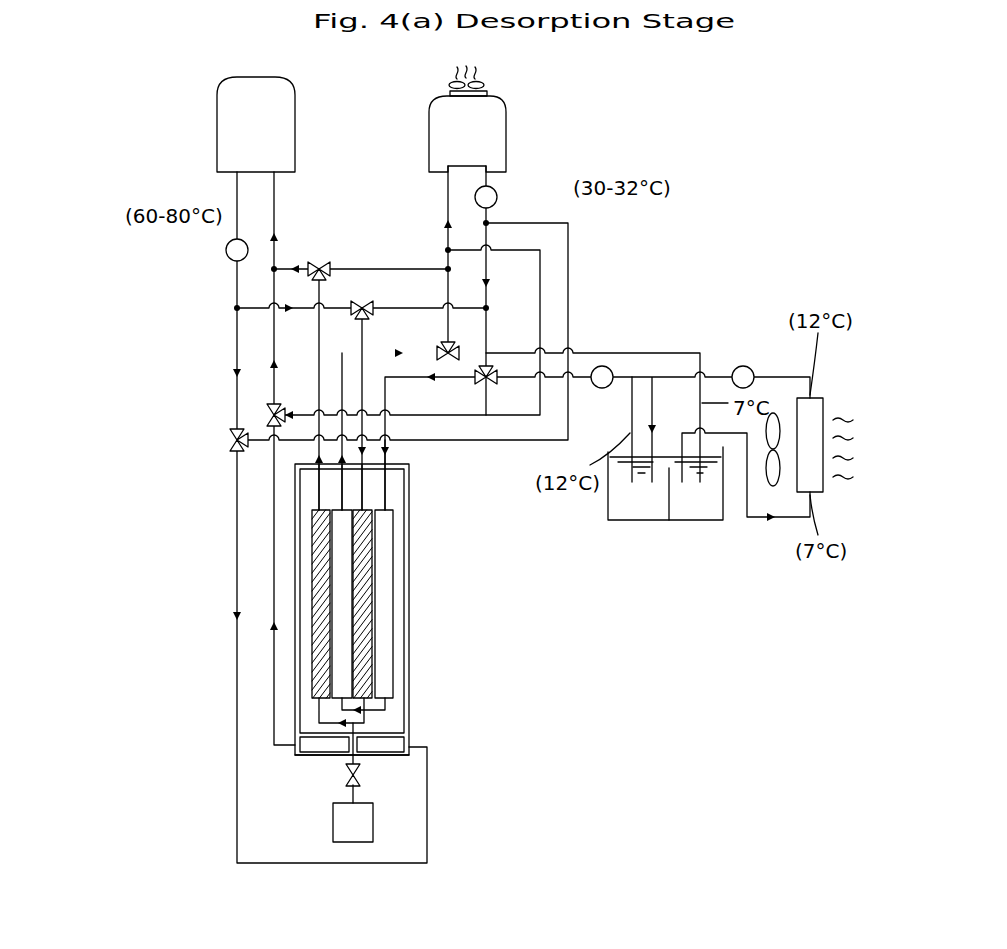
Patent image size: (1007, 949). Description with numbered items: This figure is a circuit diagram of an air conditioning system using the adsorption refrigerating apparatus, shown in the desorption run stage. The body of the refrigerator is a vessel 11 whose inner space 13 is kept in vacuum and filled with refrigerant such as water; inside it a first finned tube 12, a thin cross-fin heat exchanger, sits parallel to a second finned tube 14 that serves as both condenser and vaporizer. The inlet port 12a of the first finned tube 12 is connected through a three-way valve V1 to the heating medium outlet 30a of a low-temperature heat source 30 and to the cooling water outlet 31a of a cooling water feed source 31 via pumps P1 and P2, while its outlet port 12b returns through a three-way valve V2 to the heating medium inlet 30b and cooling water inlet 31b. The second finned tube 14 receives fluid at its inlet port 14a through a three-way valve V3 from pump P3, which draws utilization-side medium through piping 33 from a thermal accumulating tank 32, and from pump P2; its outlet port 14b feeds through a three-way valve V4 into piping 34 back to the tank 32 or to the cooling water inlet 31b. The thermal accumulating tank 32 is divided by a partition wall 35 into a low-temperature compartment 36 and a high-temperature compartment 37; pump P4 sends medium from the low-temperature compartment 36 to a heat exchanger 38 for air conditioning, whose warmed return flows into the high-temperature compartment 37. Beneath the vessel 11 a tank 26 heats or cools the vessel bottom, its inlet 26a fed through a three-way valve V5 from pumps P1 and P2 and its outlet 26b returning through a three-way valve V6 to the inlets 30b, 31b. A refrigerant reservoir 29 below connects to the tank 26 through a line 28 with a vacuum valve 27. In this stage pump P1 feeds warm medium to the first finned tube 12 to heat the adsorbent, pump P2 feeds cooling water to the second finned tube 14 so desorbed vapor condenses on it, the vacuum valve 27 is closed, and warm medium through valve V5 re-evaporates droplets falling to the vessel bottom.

The vessel 11 is at (410, 567).
The first finned tube 12 is at (313, 578).
The inlet port 12a is at (363, 493).
The outlet port 12b is at (318, 493).
The inner space 13 is at (397, 705).
The second finned tube 14 is at (338, 640).
The inlet port 14a is at (387, 503).
The outlet port 14b is at (340, 482).
The tank 26 is at (390, 758).
The inlet 26a is at (410, 745).
The outlet 26b is at (297, 750).
The vacuum valve 27 is at (362, 775).
The line 28 is at (358, 795).
The refrigerant reservoir 29 is at (375, 830).
The low-temperature heat source 30 is at (292, 98).
The heating medium outlet 30a is at (233, 175).
The heating medium inlet 30b is at (275, 175).
The cooling water feed source 31 is at (500, 118).
The cooling water outlet 31a is at (488, 173).
The cooling water inlet 31b is at (447, 173).
The thermal accumulating tank 32 is at (640, 522).
The piping 33 is at (630, 475).
The piping 34 is at (658, 350).
The partition wall 35 is at (669, 500).
The low-temperature compartment 36 is at (703, 507).
The high-temperature compartment 37 is at (623, 518).
The heat exchanger 38 is at (818, 420).
The pump P1 is at (226, 252).
The pump P2 is at (497, 202).
The pump P3 is at (600, 388).
The pump P4 is at (740, 365).
The three-way valve V1 is at (370, 303).
The three-way valve V2 is at (322, 265).
The three-way valve V3 is at (480, 385).
The three-way valve V4 is at (443, 348).
The three-way valve V5 is at (228, 442).
The three-way valve V6 is at (278, 407).